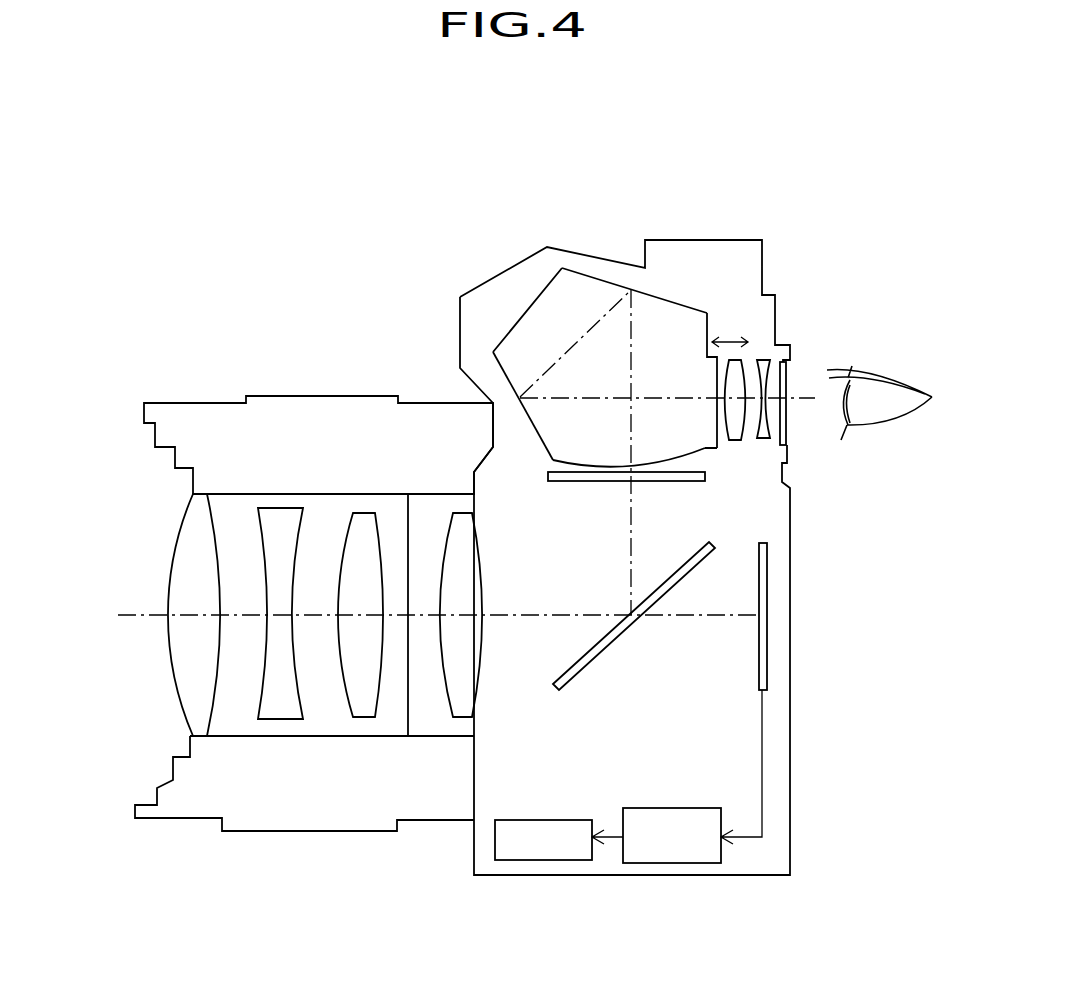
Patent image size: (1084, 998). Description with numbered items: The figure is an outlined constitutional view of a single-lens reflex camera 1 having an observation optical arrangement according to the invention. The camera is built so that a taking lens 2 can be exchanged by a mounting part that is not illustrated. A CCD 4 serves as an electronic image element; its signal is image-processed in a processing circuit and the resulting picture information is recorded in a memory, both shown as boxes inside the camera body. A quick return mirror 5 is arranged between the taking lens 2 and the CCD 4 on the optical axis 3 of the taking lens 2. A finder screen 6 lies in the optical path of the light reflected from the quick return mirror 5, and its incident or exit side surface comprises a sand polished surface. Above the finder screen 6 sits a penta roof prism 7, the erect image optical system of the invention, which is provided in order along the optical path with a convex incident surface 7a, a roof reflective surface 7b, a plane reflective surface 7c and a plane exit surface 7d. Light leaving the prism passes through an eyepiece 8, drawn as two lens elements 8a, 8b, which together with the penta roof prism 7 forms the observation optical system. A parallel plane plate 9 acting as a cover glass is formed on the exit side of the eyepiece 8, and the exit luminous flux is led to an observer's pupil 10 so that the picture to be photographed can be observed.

The single-lens reflex camera 1 is at (423, 248).
The taking lens 2 is at (170, 720).
The optical axis 3 is at (510, 616).
The CCD 4 is at (758, 658).
The quick return mirror 5 is at (598, 655).
The finder screen 6 is at (593, 481).
The penta roof prism 7 is at (649, 397).
The convex incident surface 7a is at (558, 463).
The roof reflective surface 7b is at (590, 277).
The plane reflective surface 7c is at (510, 380).
The plane exit surface 7d is at (707, 383).
The eyepiece 8 is at (760, 395).
The eyepiece lens element 8a is at (733, 358).
The eyepiece lens element 8b is at (765, 360).
The parallel plane plate 9 is at (786, 415).
The observer's pupil 10 is at (893, 397).